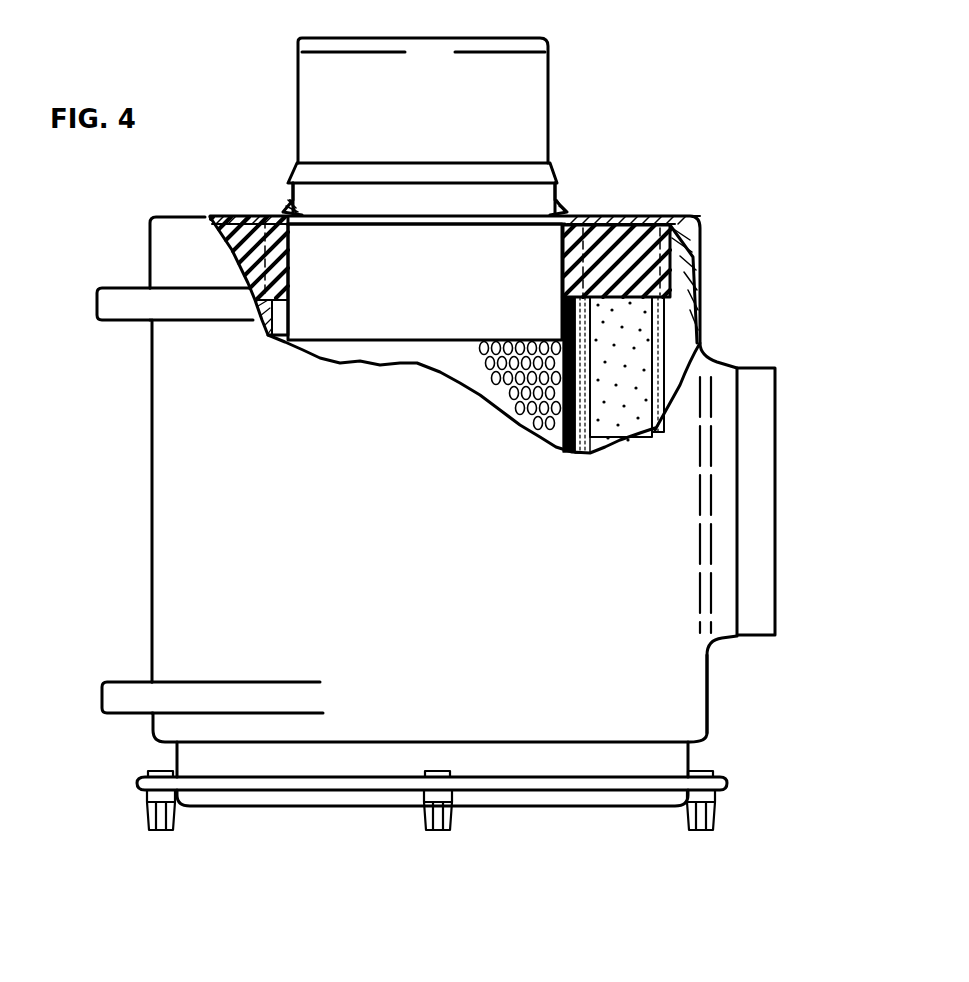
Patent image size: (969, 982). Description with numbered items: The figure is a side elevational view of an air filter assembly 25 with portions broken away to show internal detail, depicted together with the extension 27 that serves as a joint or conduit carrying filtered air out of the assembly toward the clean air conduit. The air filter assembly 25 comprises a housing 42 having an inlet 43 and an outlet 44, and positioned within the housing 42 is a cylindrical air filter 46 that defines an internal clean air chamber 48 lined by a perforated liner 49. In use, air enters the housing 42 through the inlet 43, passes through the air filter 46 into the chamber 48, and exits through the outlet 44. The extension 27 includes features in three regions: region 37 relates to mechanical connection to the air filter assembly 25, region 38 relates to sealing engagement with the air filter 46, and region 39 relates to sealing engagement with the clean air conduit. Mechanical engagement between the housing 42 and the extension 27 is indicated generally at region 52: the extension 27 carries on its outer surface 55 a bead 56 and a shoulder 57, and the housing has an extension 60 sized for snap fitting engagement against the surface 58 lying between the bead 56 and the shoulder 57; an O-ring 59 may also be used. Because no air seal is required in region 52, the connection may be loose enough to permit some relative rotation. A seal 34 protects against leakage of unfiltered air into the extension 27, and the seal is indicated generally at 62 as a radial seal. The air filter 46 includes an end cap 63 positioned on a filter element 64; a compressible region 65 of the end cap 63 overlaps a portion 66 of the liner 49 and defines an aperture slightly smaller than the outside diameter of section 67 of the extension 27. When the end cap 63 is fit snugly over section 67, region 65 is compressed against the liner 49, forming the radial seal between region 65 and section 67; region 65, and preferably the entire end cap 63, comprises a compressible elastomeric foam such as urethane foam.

The air filter assembly 25 is at (152, 525).
The extension 27 is at (551, 102).
The seal 34 is at (587, 207).
The region of mechanical connection 37 is at (317, 197).
The region of sealing engagement with air filter 38 is at (378, 333).
The region of sealing engagement with clean air conduit 39 is at (420, 103).
The housing 42 is at (708, 702).
The inlet 43 is at (774, 386).
The outlet 44 is at (302, 180).
The air filter 46 is at (637, 345).
The clean air chamber 48 is at (592, 372).
The perforated liner 49 is at (425, 353).
The region of mechanical engagement 52 is at (272, 195).
The outer surface 55 is at (418, 205).
The bead 56 is at (453, 224).
The shoulder 57 is at (458, 172).
The surface 58 is at (495, 195).
The O-ring 59 is at (298, 223).
The housing extension 60 is at (565, 210).
The radial seal 62 is at (280, 316).
The end cap 63 is at (700, 220).
The filter element 64 is at (600, 325).
The compressible region 65 is at (563, 268).
The portion of liner 66 is at (640, 212).
The section of extension 67 is at (342, 343).